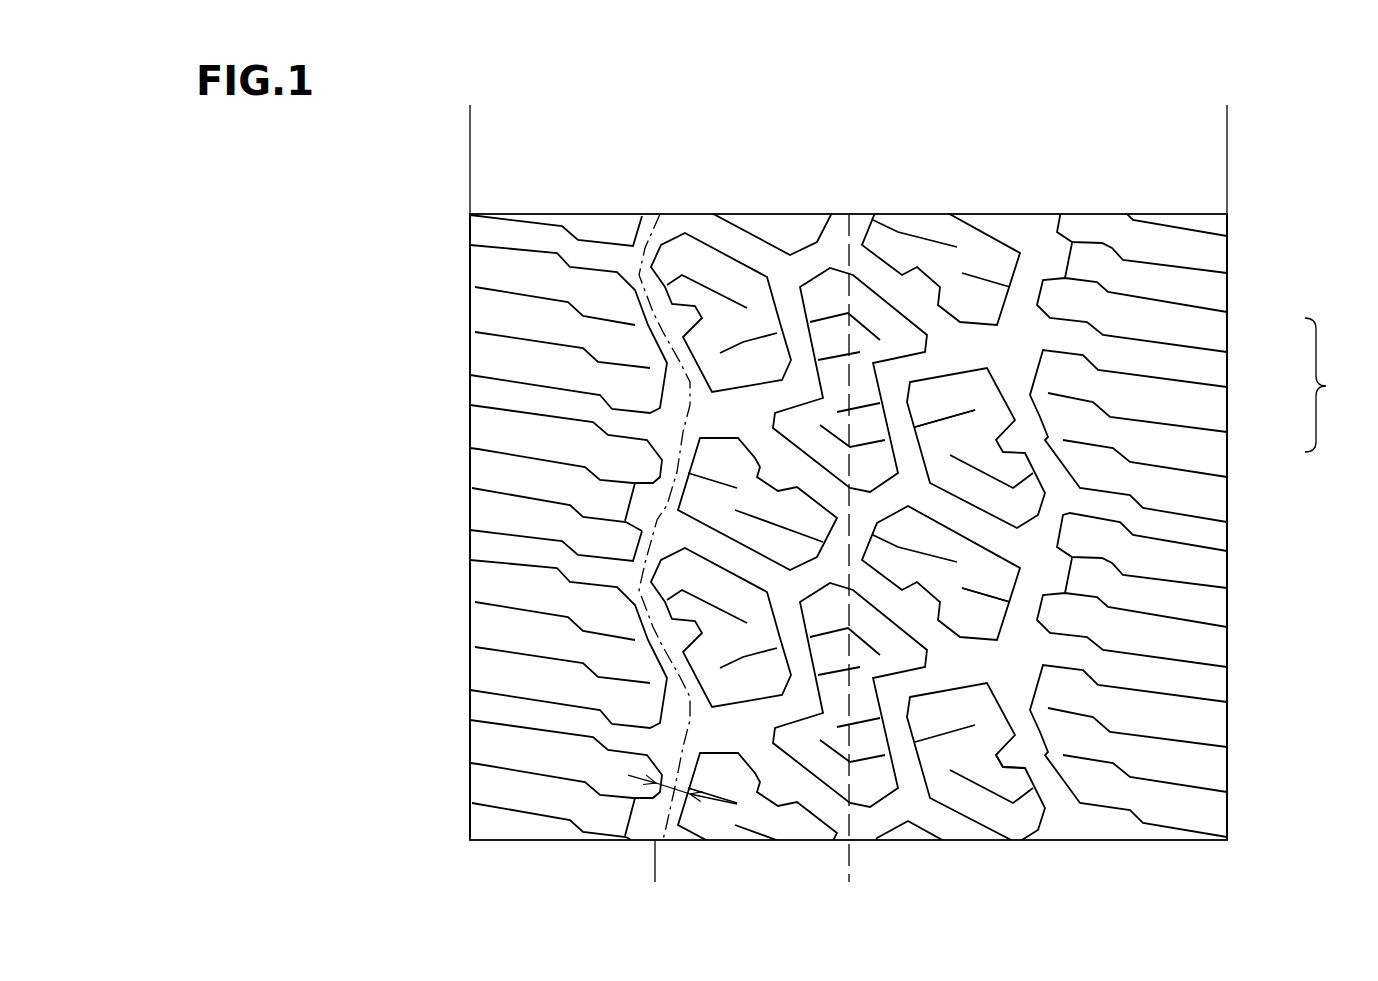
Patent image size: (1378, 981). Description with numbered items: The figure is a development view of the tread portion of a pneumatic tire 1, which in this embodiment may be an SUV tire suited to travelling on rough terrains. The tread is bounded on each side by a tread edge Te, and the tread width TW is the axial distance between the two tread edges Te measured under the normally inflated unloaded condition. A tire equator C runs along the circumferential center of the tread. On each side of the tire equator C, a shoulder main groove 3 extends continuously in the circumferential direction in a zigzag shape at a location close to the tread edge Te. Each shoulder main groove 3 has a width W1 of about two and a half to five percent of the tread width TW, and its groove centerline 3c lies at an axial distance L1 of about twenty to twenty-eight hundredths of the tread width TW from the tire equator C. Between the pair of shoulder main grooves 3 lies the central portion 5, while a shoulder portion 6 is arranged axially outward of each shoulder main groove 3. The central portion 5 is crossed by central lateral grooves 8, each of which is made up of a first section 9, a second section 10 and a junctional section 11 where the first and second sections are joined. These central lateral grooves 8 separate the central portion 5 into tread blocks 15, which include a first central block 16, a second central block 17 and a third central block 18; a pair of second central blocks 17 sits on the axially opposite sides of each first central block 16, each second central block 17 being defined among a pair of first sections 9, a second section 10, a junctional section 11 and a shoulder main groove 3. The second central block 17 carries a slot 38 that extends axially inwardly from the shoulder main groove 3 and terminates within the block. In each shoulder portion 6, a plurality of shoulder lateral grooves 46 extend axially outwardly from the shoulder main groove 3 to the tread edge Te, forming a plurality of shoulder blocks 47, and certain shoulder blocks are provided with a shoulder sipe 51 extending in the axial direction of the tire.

The pneumatic tire 1 is at (902, 183).
The shoulder main groove 3 is at (655, 238).
The groove centerline 3c is at (542, 527).
The central portion 5 is at (825, 303).
The shoulder portion 6 is at (546, 273).
The central lateral groove 8 is at (826, 492).
The first section 9 is at (879, 592).
The second section 10 is at (902, 737).
The junctional section 11 is at (975, 665).
The tread block 15 is at (1333, 385).
The first central block 16 is at (860, 384).
The second central block 17 is at (987, 436).
The third central block 18 is at (949, 575).
The slot 38 is at (1022, 763).
The shoulder lateral groove 46 is at (541, 551).
The shoulder block 47 is at (538, 318).
The shoulder sipe 51 is at (538, 470).
The tread edge Te is at (470, 260).
The tread width TW is at (472, 113).
The tire equator C is at (850, 519).
The width of shoulder main groove W1 is at (670, 795).
The axial distance L1 is at (657, 868).